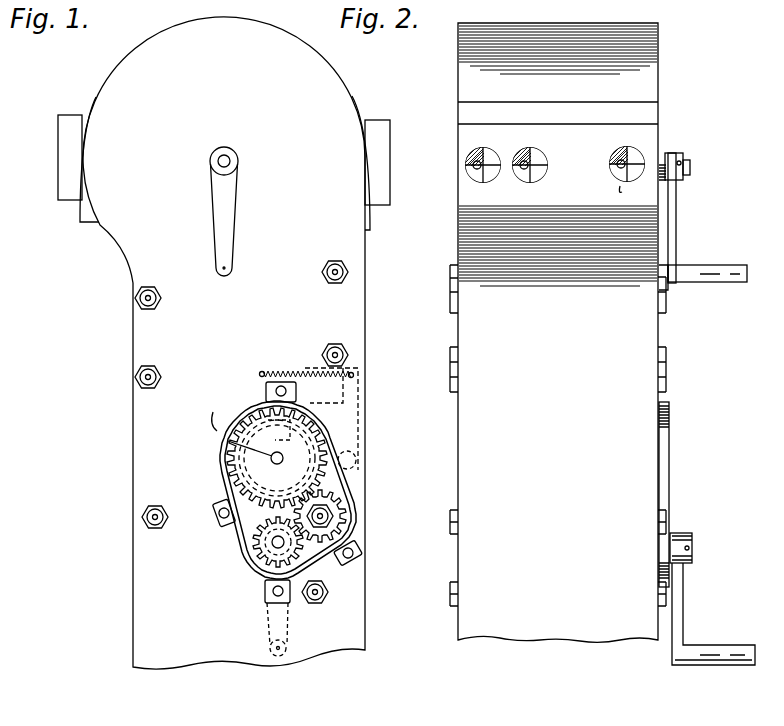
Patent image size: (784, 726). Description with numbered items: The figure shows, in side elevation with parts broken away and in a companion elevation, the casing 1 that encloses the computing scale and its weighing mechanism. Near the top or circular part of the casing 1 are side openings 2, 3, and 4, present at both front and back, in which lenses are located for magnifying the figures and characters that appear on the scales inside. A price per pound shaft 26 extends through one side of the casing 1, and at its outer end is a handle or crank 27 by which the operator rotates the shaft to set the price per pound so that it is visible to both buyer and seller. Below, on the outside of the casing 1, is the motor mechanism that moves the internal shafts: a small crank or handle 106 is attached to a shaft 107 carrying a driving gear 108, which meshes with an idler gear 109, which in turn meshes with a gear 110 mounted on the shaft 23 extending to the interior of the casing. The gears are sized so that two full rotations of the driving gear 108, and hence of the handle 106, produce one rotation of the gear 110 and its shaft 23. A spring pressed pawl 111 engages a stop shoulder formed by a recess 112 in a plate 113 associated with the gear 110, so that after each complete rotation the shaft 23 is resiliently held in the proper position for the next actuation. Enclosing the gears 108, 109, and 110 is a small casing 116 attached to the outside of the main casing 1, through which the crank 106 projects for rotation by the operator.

In FIG. 1, the casing 1 is at (133, 339).
In FIG. 2, the casing 1 is at (470, 405).
In FIG. 2, the side opening 2 is at (483, 148).
In FIG. 2, the side opening 3 is at (535, 148).
In FIG. 1, the side opening 4 is at (66, 142).
In FIG. 2, the side opening 4 is at (630, 146).
In FIG. 1, the shaft 23 is at (229, 438).
In FIG. 1, the shaft 26 is at (233, 157).
In FIG. 2, the shaft 26 is at (690, 167).
In FIG. 1, the handle or crank 27 is at (232, 222).
In FIG. 2, the handle or crank 27 is at (676, 258).
In FIG. 1, the crank or handle 106 is at (262, 620).
In FIG. 2, the crank or handle 106 is at (683, 638).
In FIG. 1, the shaft 107 is at (243, 564).
In FIG. 2, the shaft 107 is at (693, 553).
In FIG. 1, the driving gear 108 is at (252, 540).
In FIG. 1, the idler gear 109 is at (350, 511).
In FIG. 1, the gear 110 is at (222, 466).
In FIG. 1, the spring pressed pawl 111 is at (303, 373).
In FIG. 1, the recess 112 is at (262, 403).
In FIG. 1, the plate 113 is at (289, 439).
In FIG. 1, the small casing 116 is at (226, 485).
In FIG. 2, the small casing 116 is at (668, 469).